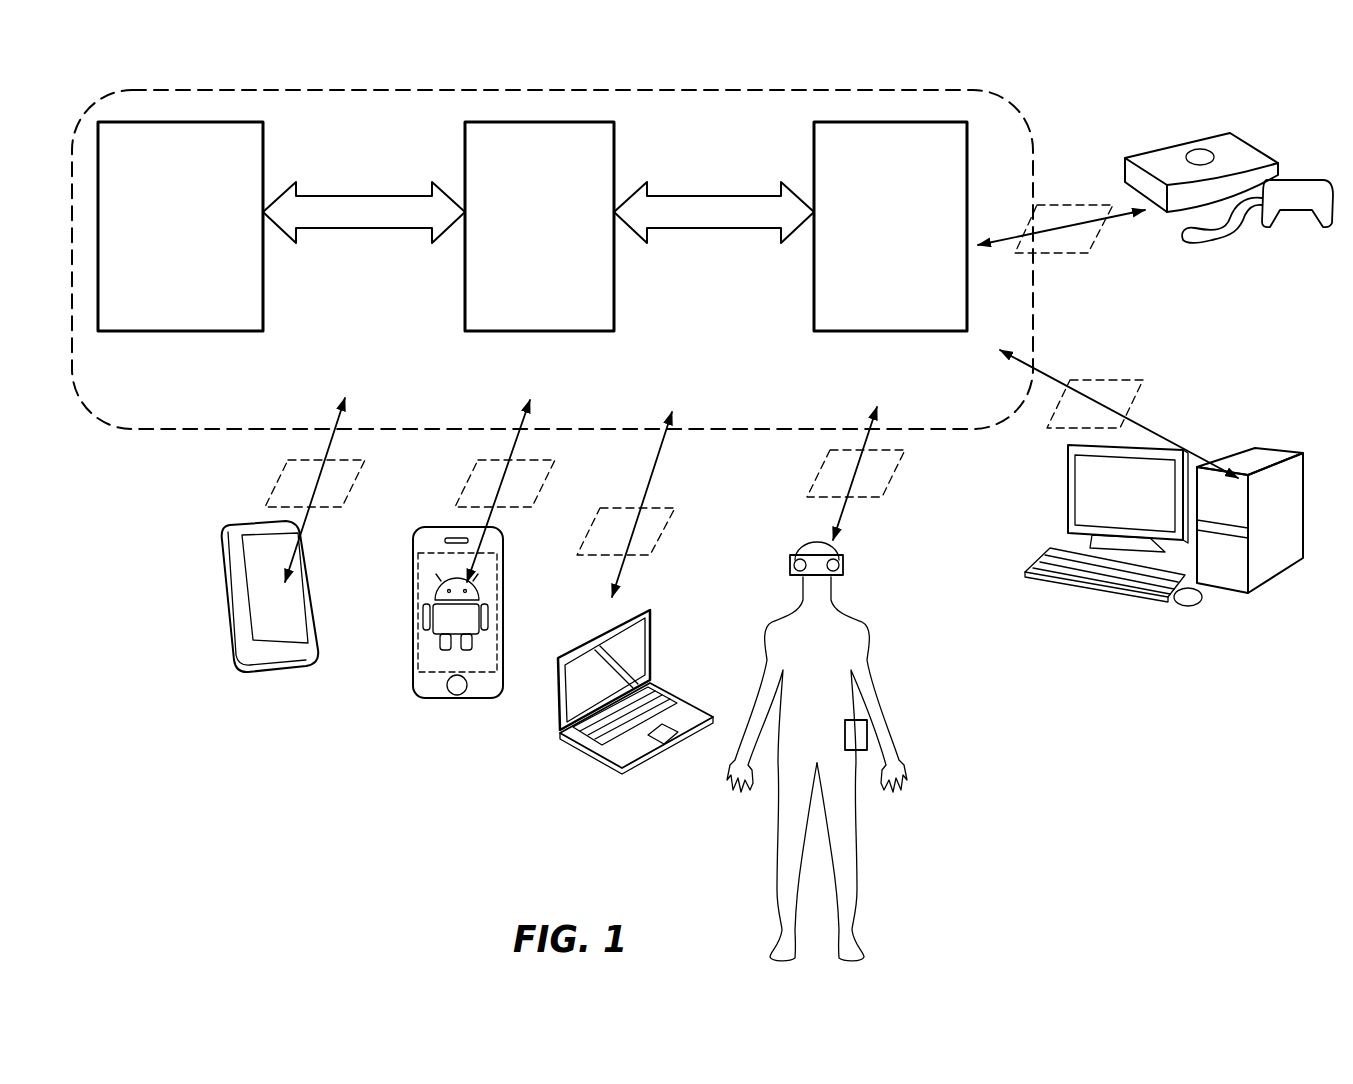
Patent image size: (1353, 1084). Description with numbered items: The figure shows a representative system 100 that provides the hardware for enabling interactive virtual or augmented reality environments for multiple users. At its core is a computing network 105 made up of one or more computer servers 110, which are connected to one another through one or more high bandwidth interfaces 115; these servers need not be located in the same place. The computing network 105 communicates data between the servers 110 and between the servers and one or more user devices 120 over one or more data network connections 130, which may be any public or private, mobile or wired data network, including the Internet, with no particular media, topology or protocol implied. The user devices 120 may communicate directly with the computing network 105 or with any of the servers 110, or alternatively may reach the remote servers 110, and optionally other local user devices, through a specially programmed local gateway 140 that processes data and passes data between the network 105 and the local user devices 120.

The system 100 is at (1068, 97).
The computing network 105 is at (313, 90).
The computer server 110 is at (156, 263).
The high bandwidth interface 115 is at (377, 213).
The user device 120 is at (240, 667).
The data network connection 130 is at (343, 420).
The local gateway 140 is at (277, 484).